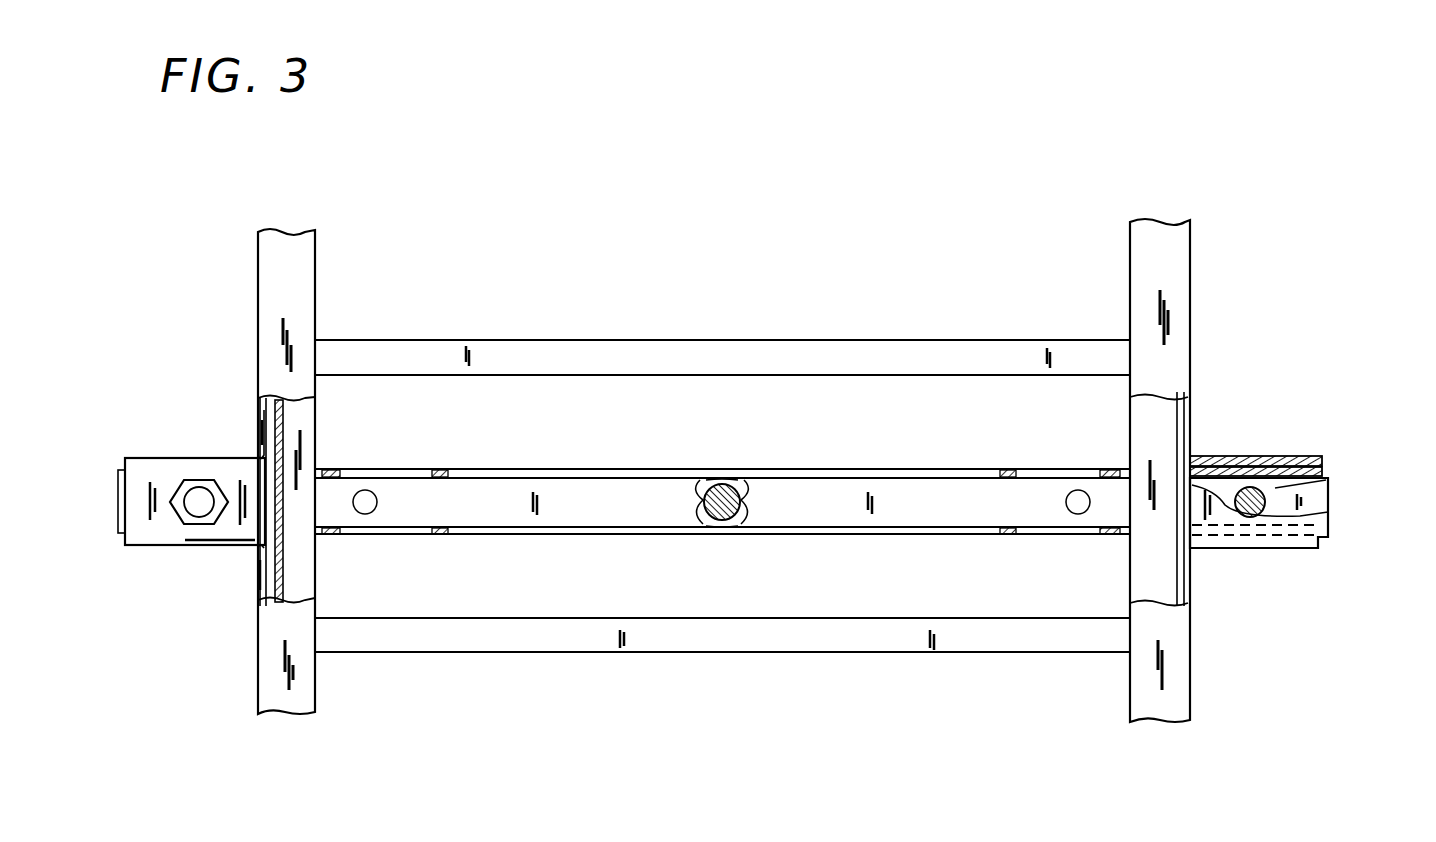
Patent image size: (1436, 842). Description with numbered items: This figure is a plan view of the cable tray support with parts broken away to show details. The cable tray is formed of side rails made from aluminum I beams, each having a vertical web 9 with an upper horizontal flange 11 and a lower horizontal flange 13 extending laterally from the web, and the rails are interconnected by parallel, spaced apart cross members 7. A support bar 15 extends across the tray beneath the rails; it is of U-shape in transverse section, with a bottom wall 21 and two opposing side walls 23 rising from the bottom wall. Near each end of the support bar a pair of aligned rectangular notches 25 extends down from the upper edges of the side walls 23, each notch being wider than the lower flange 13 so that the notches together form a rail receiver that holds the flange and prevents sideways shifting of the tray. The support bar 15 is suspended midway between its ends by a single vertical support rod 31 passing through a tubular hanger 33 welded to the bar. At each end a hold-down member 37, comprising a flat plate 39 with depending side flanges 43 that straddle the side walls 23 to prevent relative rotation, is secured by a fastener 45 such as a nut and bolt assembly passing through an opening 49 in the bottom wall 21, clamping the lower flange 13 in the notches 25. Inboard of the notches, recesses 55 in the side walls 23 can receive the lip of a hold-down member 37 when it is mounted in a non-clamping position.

The cross members 7 is at (683, 340).
The vertical web 9 is at (270, 575).
The upper horizontal flange 11 is at (300, 257).
The lower horizontal flange 13 is at (300, 416).
The support bar 15 is at (722, 490).
The bottom wall 21 is at (815, 496).
The side walls 23 is at (922, 470).
The notches 25 is at (322, 470).
The vertical support rod 31 is at (726, 527).
The tubular hanger 33 is at (732, 506).
The hold-down member 37 is at (172, 505).
The flat plate 39 is at (158, 545).
The side flanges 43 is at (1298, 477).
The fastener 45 is at (199, 460).
The opening 49 is at (1285, 488).
The recesses 55 is at (440, 472).